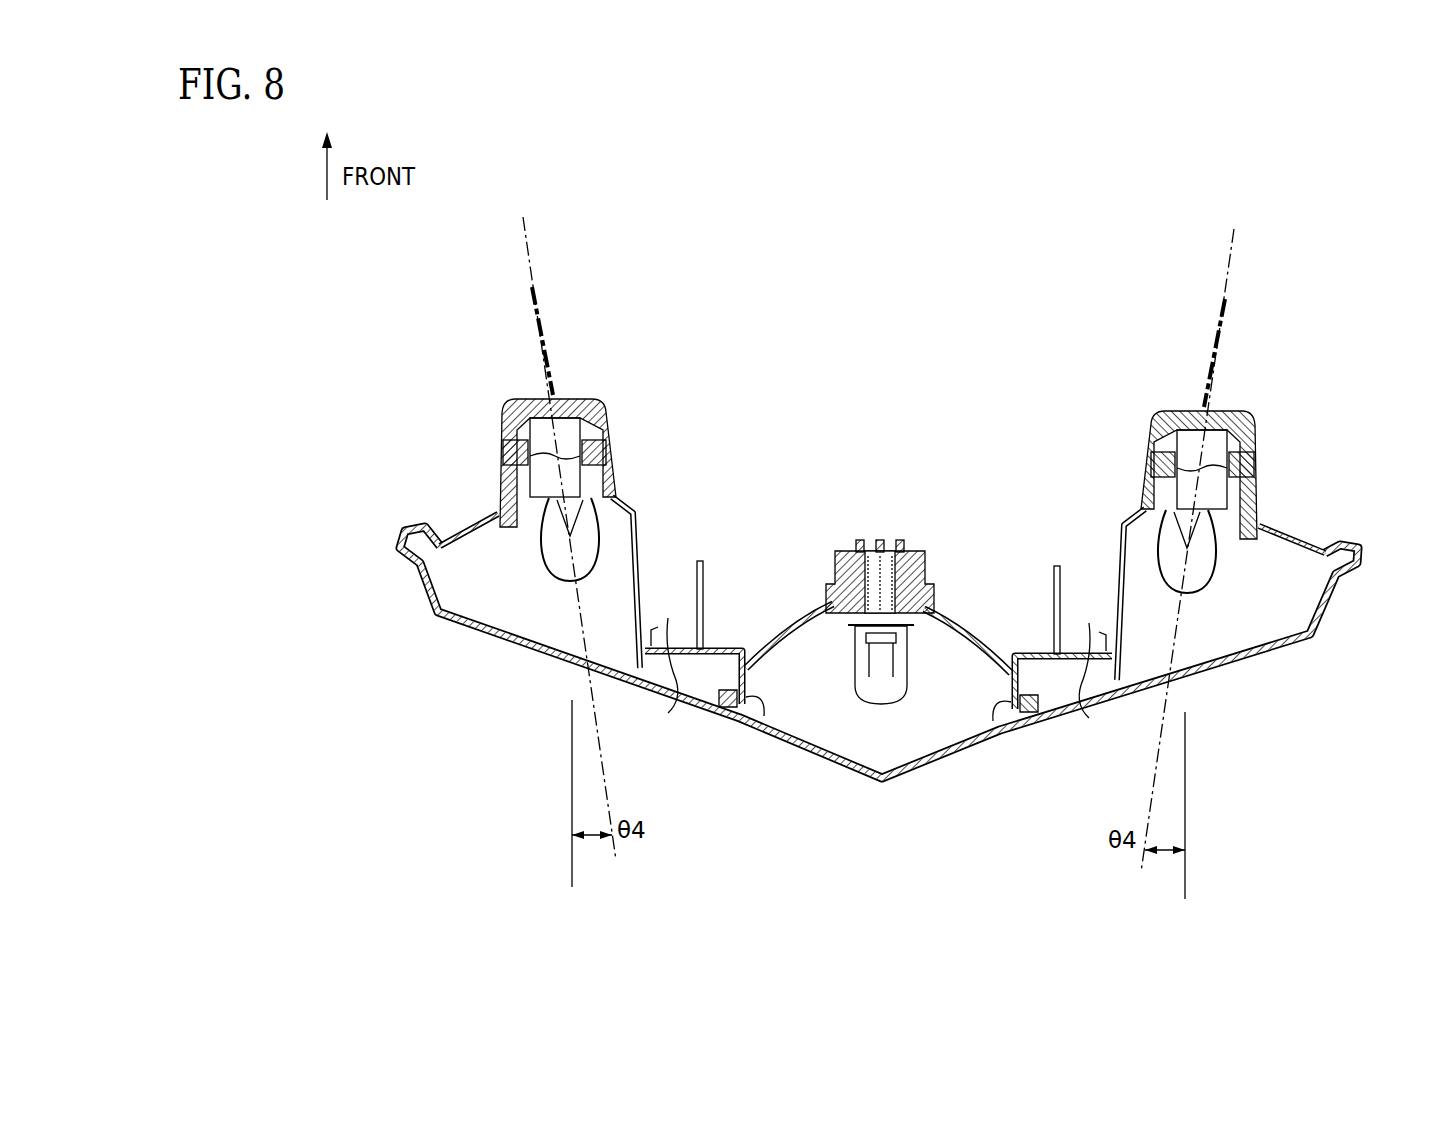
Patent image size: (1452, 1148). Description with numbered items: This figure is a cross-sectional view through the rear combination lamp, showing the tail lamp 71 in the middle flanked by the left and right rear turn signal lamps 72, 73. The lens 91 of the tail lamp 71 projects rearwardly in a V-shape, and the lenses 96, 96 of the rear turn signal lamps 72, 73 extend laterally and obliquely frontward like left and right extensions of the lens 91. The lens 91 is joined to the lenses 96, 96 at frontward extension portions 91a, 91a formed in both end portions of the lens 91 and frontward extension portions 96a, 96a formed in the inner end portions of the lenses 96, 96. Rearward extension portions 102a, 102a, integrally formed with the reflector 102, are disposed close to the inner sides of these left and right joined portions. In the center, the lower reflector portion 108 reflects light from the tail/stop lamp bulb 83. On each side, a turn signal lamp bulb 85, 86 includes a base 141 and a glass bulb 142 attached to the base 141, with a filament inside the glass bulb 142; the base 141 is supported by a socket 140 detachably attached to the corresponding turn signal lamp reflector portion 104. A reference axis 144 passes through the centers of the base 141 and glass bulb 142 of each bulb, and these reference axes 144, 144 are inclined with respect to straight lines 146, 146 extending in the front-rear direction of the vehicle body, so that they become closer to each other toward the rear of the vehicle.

The tail lamp 71 is at (879, 680).
The rear turn signal lamp 72 is at (544, 570).
The rear turn signal lamp 73 is at (1218, 585).
The tail/stop lamp bulb 83 is at (880, 720).
The turn signal lamp bulb 85 is at (630, 497).
The turn signal lamp bulb 86 is at (1120, 513).
The lens 91 is at (937, 760).
The frontward extension portion 91a is at (745, 672).
The lens 96 is at (510, 647).
The frontward extension portion 96a is at (720, 648).
The reflector 102 is at (813, 595).
The rearward extension portion 102a is at (755, 700).
The turn signal lamp reflector portion 104 is at (457, 500).
The lower reflector portion 108 is at (952, 620).
The socket 140 is at (508, 413).
The base 141 is at (545, 462).
The glass bulb 142 is at (615, 545).
The reference axis 144 is at (525, 248).
The straight line 146 is at (572, 866).